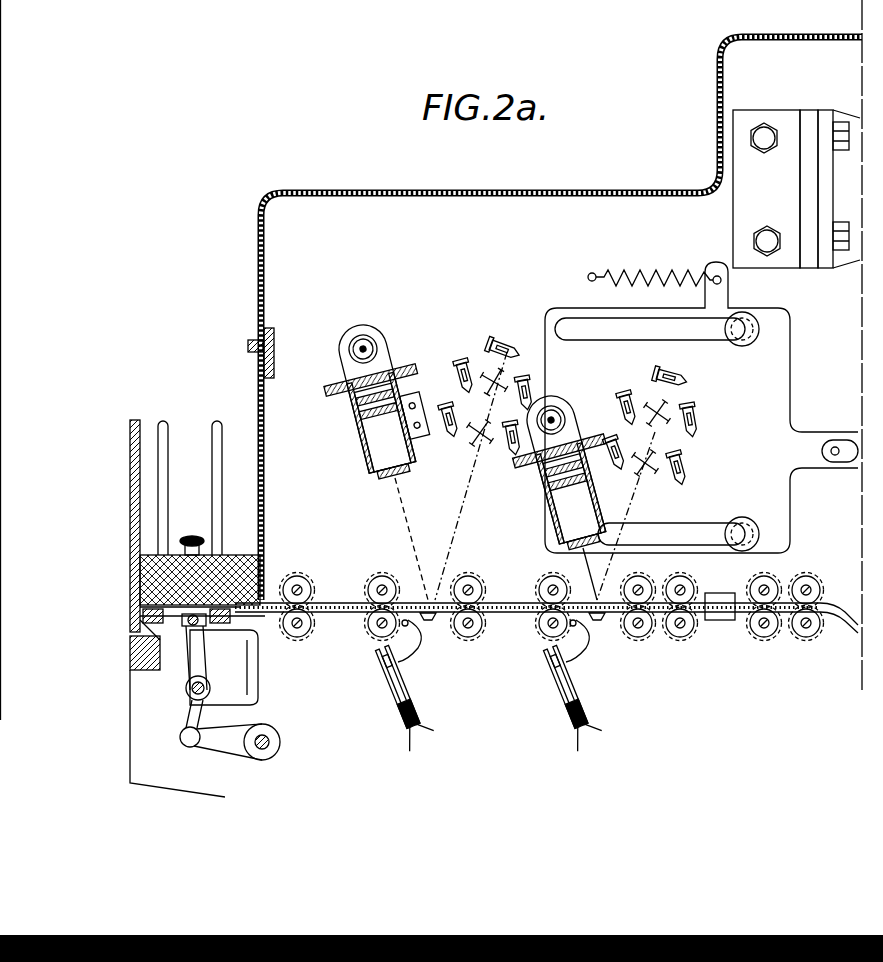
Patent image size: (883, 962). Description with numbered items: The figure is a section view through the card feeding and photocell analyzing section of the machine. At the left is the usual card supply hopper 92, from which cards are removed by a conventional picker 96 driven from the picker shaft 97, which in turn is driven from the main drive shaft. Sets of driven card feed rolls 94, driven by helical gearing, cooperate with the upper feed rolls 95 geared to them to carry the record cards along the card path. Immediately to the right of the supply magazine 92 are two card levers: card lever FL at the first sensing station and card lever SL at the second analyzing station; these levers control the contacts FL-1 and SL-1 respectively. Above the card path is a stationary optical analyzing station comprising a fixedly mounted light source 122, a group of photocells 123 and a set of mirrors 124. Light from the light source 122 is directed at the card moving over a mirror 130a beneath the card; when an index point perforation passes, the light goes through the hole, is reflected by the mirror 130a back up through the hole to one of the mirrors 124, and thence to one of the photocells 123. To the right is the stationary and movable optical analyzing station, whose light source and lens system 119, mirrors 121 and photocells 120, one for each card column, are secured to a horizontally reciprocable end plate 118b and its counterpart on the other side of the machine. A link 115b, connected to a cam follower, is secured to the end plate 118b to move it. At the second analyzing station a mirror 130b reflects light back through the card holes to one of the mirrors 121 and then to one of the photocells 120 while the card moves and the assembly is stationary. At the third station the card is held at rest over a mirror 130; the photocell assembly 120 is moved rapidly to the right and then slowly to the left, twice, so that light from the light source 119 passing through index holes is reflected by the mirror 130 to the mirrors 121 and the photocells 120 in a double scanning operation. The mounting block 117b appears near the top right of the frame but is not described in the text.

The card supply hopper 92 is at (172, 555).
The card feed rolls 94 is at (372, 632).
The upper feed rolls 95 is at (380, 586).
The picker 96 is at (150, 648).
The picker shaft 97 is at (250, 742).
The link 115b is at (850, 445).
The mounting block 117b is at (852, 118).
The end plate 118b is at (770, 502).
The light source and lens system 119 is at (556, 405).
The photocells 120 is at (676, 377).
The mirrors 121 is at (670, 413).
The light source 122 is at (366, 338).
The photocells 123 is at (462, 367).
The mirrors 124 is at (490, 365).
The mirror 130 is at (720, 620).
The mirror 130a is at (428, 630).
The mirror 130b is at (602, 630).
The card lever FL is at (416, 658).
The contacts FL-1 is at (392, 678).
The card lever SL is at (590, 652).
The contacts SL-1 is at (560, 678).